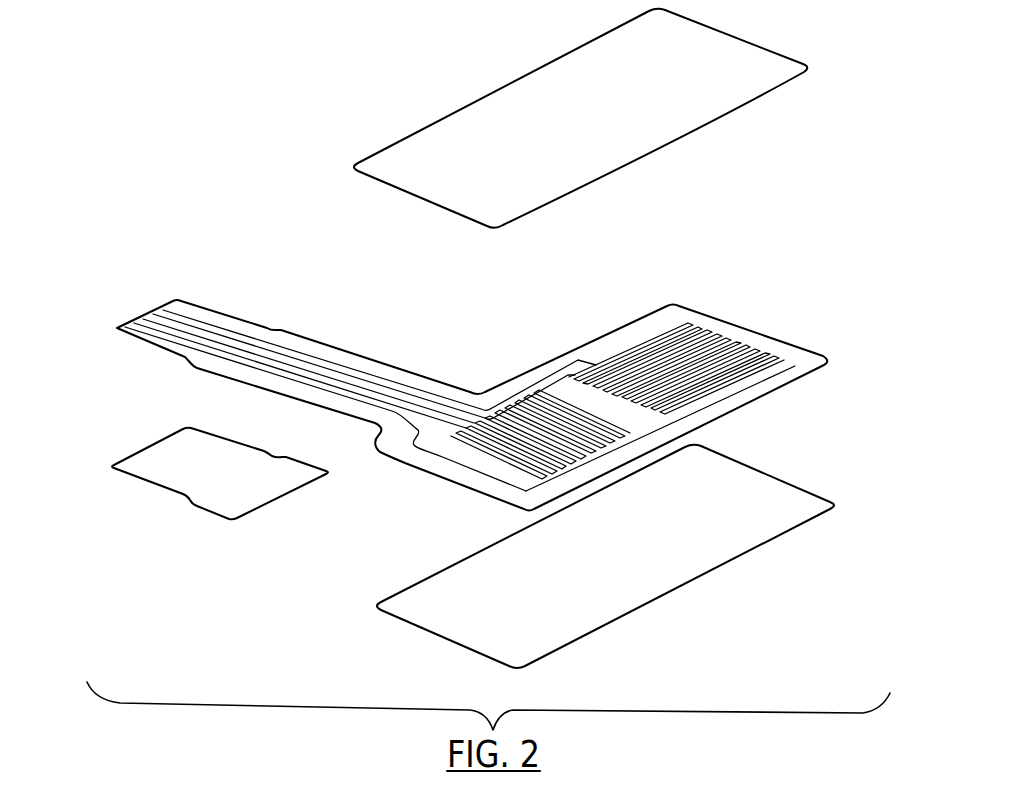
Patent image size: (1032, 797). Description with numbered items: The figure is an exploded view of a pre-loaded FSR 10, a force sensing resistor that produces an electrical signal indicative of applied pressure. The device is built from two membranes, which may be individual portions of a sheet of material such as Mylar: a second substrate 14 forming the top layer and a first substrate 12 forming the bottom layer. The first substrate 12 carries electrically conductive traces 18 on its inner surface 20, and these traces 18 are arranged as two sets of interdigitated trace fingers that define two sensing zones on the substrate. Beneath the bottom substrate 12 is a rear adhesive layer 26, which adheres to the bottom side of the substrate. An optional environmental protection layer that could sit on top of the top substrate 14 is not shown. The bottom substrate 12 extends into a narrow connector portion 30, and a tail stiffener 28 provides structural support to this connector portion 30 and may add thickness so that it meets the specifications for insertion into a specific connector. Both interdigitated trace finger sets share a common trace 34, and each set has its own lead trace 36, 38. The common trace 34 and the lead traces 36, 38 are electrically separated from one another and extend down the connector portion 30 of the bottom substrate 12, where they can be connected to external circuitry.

The pre-loaded FSR 10 is at (391, 88).
The first substrate 12 is at (852, 336).
The second substrate 14 is at (806, 39).
The electrically conductive traces 18 is at (751, 392).
The inner surface 20 is at (802, 353).
The rear adhesive layer 26 is at (855, 492).
The tail stiffener 28 is at (150, 500).
The connector portion 30 is at (351, 339).
The common trace 34 is at (133, 323).
The lead trace 36 is at (168, 302).
The lead trace 38 is at (150, 312).